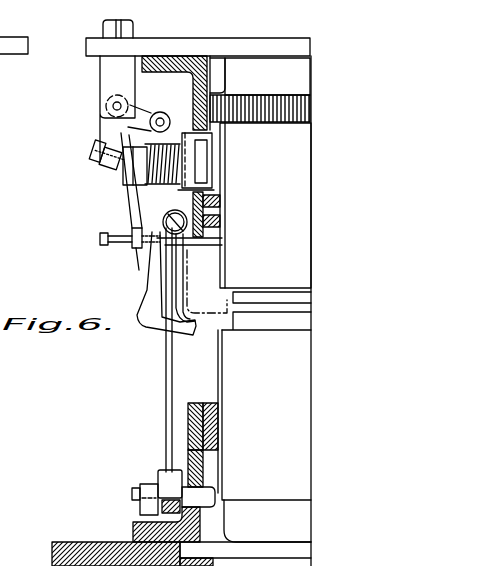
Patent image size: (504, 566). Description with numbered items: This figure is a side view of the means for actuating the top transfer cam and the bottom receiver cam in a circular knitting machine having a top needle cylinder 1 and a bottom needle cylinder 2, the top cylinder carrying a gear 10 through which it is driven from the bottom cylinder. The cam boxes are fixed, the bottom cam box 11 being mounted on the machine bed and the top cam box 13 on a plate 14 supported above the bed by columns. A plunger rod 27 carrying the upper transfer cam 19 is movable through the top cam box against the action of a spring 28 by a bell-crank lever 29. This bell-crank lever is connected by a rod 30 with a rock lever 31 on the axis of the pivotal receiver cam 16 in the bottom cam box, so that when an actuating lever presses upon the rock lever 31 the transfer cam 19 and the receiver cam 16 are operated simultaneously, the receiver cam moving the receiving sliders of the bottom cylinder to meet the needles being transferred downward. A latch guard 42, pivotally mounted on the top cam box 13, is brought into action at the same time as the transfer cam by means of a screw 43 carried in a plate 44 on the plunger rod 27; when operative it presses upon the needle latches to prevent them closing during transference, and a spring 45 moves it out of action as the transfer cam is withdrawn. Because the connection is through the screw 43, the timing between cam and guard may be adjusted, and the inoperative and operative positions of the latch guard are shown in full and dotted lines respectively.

The top needle cylinder 1 is at (265, 226).
The bottom needle cylinder 2 is at (181, 448).
The gear 10 is at (281, 126).
The bottom cam box 11 is at (206, 404).
The top cam box 13 is at (192, 93).
The plate 14 is at (262, 49).
The receiver cam 16 is at (205, 496).
The upper transfer cam 19 is at (200, 144).
The plunger rod 27 is at (121, 173).
The spring 28 is at (163, 174).
The bell-crank lever 29 is at (110, 133).
The rod 30 is at (167, 396).
The rock lever 31 is at (158, 483).
The latch guard 42 is at (153, 315).
The screw 43 is at (145, 255).
The plate 44 is at (134, 216).
The spring 45 is at (188, 258).